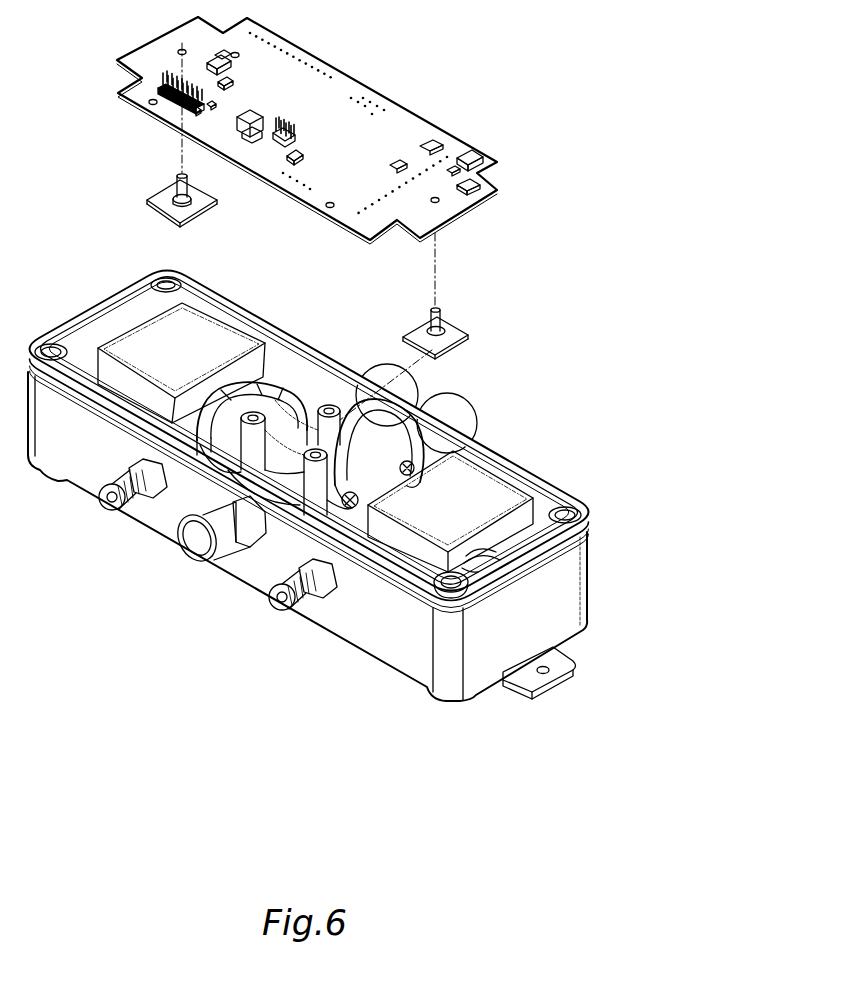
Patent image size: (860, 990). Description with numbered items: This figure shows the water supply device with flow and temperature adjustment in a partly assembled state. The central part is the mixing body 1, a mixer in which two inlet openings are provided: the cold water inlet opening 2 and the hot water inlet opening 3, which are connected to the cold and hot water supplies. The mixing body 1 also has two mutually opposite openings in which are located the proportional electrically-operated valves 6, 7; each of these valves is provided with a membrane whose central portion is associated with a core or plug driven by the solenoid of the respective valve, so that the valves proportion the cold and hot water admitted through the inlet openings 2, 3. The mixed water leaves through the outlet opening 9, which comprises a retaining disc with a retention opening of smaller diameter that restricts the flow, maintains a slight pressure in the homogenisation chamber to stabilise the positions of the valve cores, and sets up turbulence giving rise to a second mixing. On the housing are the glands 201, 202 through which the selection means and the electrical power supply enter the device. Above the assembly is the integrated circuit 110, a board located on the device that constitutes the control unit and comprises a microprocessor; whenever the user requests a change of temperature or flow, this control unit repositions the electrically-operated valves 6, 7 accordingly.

The integrated circuit 110 is at (415, 127).
The mixing body 1 is at (458, 326).
The cold water inlet opening 2 is at (395, 362).
The hot water inlet opening 3 is at (450, 396).
The proportional electrically-operated valve 6 is at (497, 488).
The proportional electrically-operated valve 7 is at (138, 345).
The outlet opening 9 is at (187, 558).
The gland 201 is at (105, 508).
The gland 202 is at (273, 610).